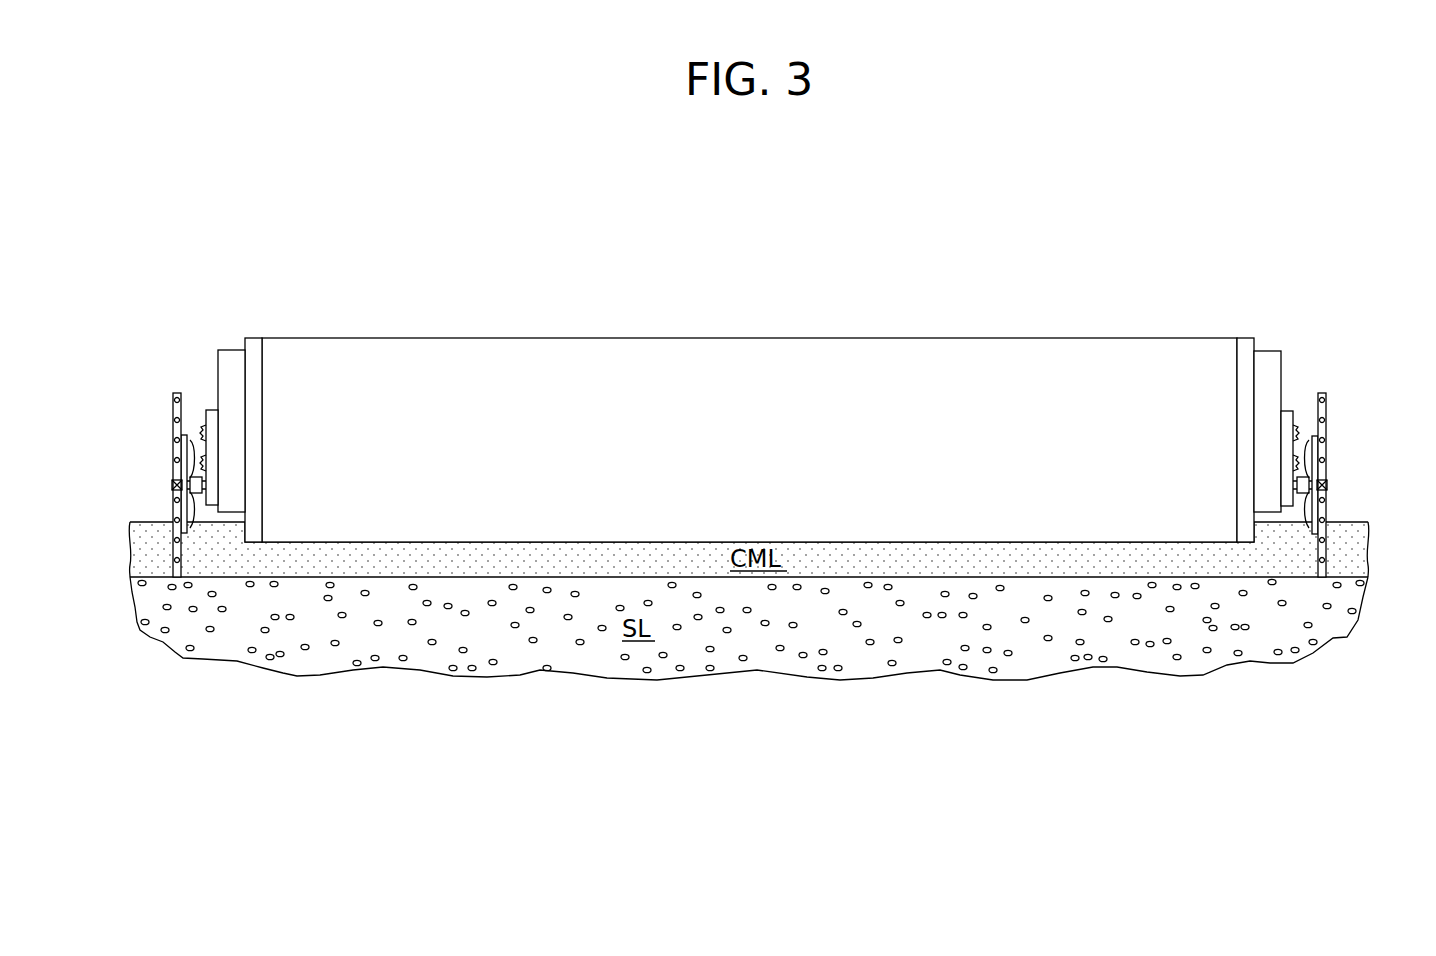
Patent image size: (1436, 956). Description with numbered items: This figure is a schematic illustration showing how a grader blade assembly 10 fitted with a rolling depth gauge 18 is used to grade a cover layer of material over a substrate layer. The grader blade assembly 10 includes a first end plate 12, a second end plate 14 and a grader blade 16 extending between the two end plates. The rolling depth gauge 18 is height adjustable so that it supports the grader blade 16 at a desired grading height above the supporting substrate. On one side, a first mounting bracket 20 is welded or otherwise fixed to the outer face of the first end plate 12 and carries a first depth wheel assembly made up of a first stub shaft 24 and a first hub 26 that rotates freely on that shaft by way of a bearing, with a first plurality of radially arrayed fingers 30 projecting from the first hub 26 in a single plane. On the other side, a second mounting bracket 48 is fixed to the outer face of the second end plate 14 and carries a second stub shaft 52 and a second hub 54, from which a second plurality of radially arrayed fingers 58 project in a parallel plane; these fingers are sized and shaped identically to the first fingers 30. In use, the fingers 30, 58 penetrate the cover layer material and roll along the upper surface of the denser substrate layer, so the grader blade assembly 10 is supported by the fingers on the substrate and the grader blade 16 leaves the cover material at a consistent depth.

The grader blade assembly 10 is at (298, 206).
The first end plate 12 is at (252, 338).
The second end plate 14 is at (1248, 338).
The grader blade 16 is at (548, 346).
The rolling depth gauge 18 is at (150, 361).
The first mounting bracket 20 is at (234, 457).
The first stub shaft 24 is at (183, 483).
The first hub 26 is at (197, 440).
The first plurality of radially arrayed fingers 30 is at (175, 447).
The second mounting bracket 48 is at (1264, 451).
The second stub shaft 52 is at (1318, 483).
The second hub 54 is at (1312, 440).
The second plurality of radially arrayed fingers 58 is at (1325, 447).